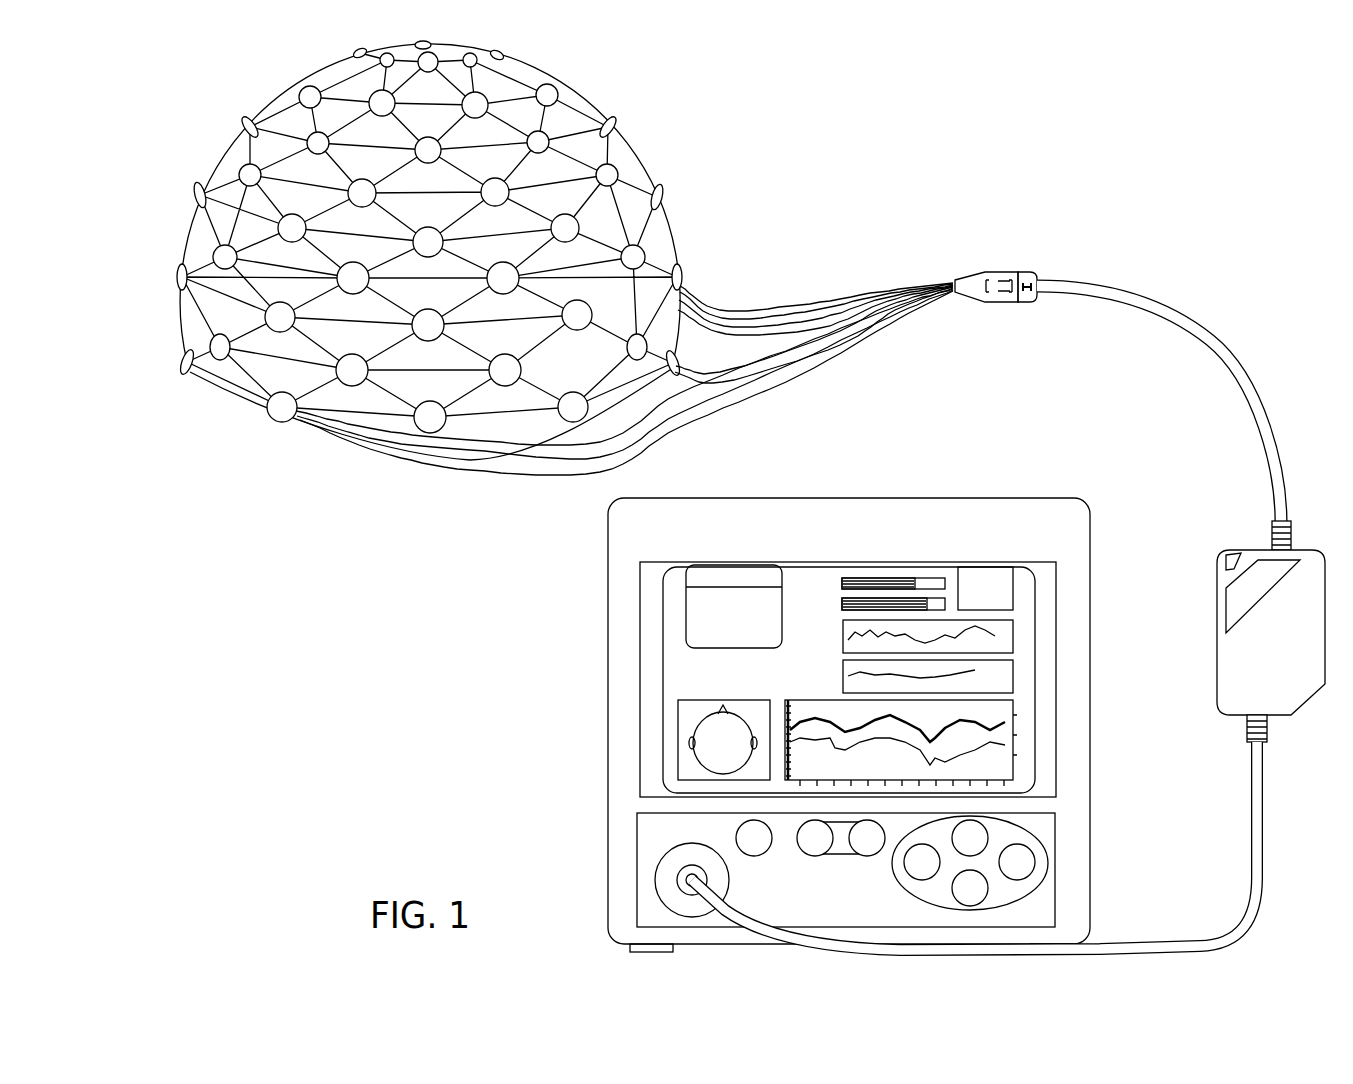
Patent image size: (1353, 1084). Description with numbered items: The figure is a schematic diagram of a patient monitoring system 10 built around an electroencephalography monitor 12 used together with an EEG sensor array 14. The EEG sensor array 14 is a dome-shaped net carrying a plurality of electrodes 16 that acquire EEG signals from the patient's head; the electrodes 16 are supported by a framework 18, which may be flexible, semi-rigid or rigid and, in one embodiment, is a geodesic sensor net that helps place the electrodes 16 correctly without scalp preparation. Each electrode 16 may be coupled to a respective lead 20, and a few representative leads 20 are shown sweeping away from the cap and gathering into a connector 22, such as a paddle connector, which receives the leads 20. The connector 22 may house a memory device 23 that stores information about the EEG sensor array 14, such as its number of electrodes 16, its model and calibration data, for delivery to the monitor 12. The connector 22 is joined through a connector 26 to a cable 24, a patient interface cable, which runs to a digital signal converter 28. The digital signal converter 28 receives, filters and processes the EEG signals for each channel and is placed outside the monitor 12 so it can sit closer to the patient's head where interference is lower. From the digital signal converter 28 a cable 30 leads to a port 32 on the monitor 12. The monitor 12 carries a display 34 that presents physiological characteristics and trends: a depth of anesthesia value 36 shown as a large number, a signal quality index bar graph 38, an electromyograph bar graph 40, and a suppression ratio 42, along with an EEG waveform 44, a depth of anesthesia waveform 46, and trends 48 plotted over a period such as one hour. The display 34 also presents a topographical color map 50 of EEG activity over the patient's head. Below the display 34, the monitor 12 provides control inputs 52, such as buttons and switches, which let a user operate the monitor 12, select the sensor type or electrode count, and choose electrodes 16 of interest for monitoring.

The patient monitoring system 10 is at (1087, 148).
The EEG monitor 12 is at (608, 685).
The EEG sensor array 14 is at (690, 113).
The electrodes 16 is at (200, 185).
The framework 18 is at (319, 398).
The lead 20 is at (717, 402).
The connector 22 is at (992, 273).
The memory device 23 is at (990, 293).
The cable 24 is at (1117, 283).
The connector 26 is at (1033, 272).
The digital signal converter 28 is at (1217, 621).
The cable 30 is at (1252, 884).
The port 32 is at (677, 878).
The display 34 is at (640, 598).
The depth of anesthesia (DOA) value 36 is at (700, 650).
The signal quality index (SQI) bar graph 38 is at (900, 578).
The electromyograph (EMG) bar graph 40 is at (947, 608).
The suppression ratio (SR) 42 is at (1017, 562).
The EEG waveform 44 is at (1013, 630).
The depth of anesthesia waveform 46 is at (1013, 673).
The trends 48 is at (1013, 770).
The topographical color map 50 is at (680, 720).
The control inputs 52 is at (750, 856).